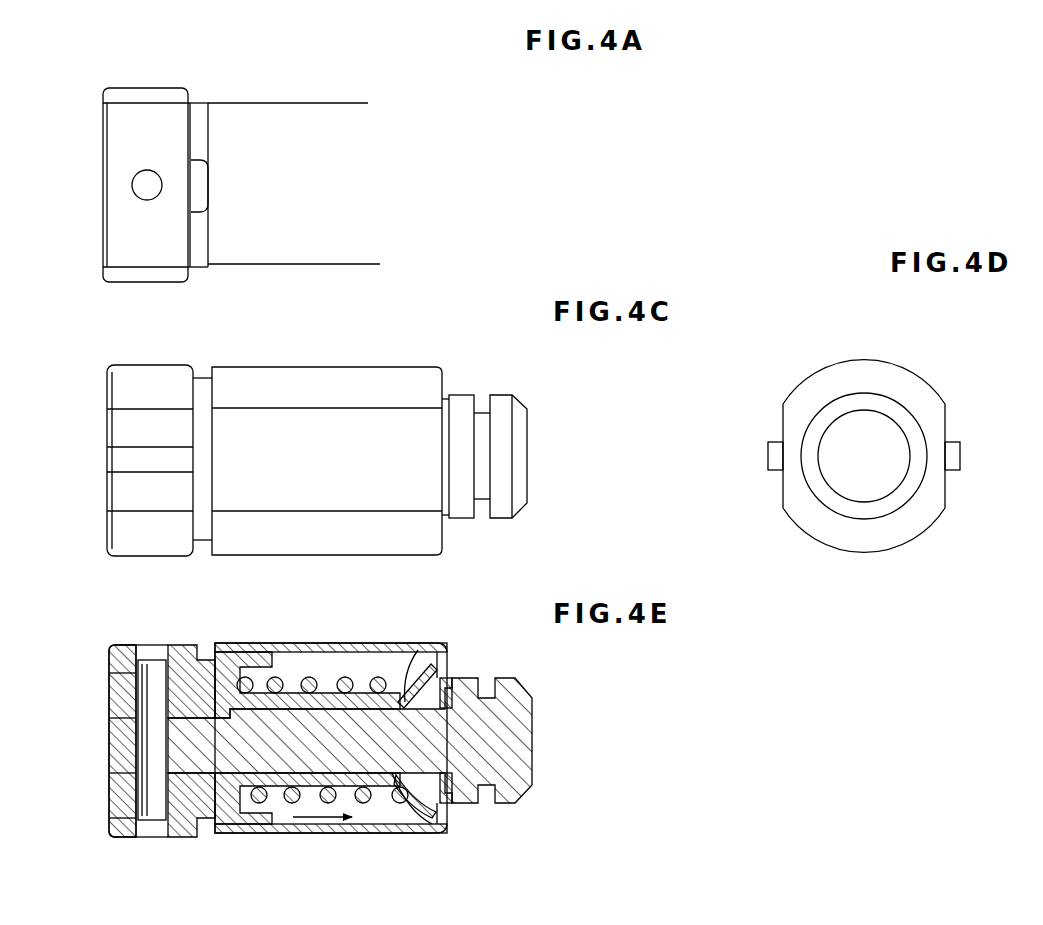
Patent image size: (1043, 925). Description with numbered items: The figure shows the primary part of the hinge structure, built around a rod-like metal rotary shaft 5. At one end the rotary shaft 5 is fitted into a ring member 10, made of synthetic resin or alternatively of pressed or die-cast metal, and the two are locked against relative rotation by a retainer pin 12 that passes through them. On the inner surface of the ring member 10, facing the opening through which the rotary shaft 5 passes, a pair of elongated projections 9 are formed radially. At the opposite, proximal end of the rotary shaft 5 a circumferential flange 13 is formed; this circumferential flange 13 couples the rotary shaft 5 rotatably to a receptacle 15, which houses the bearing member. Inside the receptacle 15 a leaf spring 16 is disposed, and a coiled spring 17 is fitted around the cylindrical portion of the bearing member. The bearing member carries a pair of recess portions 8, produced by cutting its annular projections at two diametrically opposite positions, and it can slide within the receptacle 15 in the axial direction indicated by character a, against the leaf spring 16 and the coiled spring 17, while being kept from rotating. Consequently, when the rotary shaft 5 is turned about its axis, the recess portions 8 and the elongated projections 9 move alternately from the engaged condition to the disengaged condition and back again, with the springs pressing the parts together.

In FIG. 4E, the rotary shaft 5 is at (103, 747).
In FIG. 4A, the recess portions 8 is at (193, 213).
In FIG. 4A, the elongated projections 9 is at (197, 167).
In FIG. 4A, the ring member 10 is at (112, 133).
In FIG. 4C, the ring member 10 is at (123, 530).
In FIG. 4E, the ring member 10 is at (122, 645).
In FIG. 4E, the retainer pin 12 is at (155, 692).
In FIG. 4C, the circumferential flange 13 is at (503, 400).
In FIG. 4D, the circumferential flange 13 is at (895, 365).
In FIG. 4E, the circumferential flange 13 is at (523, 698).
In FIG. 4A, the receptacle 15 is at (323, 115).
In FIG. 4C, the receptacle 15 is at (337, 378).
In FIG. 4E, the receptacle 15 is at (333, 738).
In FIG. 4E, the leaf spring 16 is at (413, 663).
In FIG. 4E, the coiled spring 17 is at (343, 677).
In FIG. 4E, the axial direction a is at (322, 823).